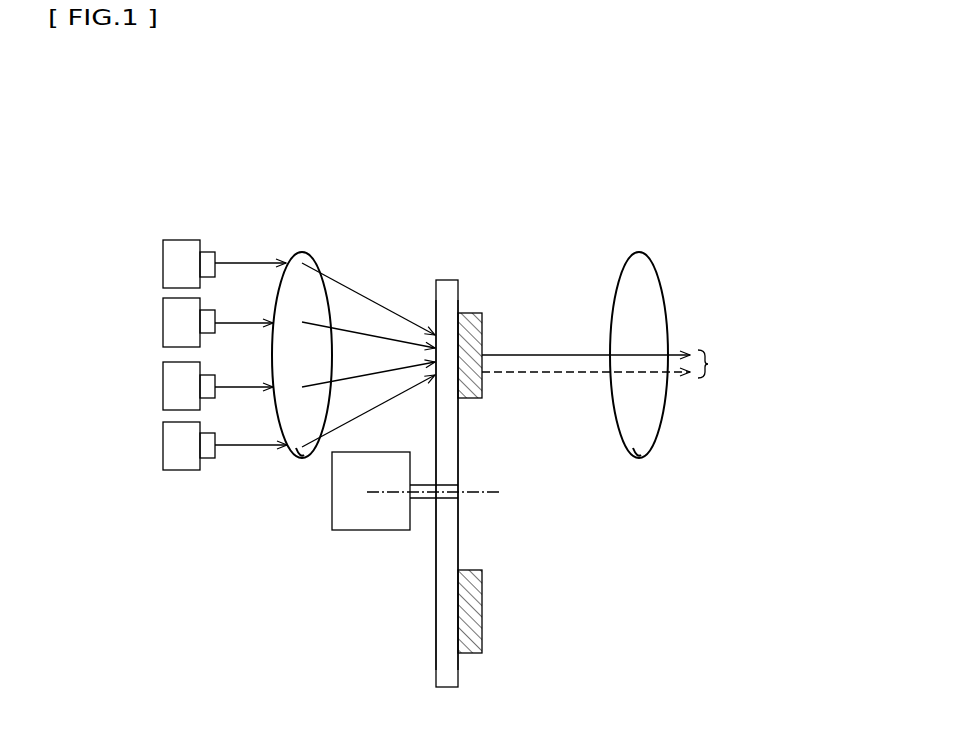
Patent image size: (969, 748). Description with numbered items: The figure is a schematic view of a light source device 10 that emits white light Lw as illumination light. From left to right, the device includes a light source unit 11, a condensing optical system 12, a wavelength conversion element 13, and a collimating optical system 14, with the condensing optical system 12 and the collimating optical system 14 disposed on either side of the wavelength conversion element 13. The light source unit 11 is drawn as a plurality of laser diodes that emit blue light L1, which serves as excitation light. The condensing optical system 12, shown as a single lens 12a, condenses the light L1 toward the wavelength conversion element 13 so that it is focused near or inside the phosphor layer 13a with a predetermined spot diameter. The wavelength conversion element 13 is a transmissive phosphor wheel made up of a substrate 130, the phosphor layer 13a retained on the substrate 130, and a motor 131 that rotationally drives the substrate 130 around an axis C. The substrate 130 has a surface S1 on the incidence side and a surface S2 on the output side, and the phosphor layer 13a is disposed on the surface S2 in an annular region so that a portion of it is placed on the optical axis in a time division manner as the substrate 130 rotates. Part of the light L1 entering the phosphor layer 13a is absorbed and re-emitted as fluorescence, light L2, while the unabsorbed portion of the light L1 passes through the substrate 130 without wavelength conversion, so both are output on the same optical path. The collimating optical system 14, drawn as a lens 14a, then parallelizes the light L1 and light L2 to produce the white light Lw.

The light source device 10 is at (697, 109).
The light source unit 11 is at (153, 177).
The condensing optical system 12 is at (277, 177).
The lens 12a is at (303, 459).
The wavelength conversion element 13 is at (452, 221).
The phosphor layer 13a is at (470, 326).
The substrate 130 is at (446, 643).
The motor 131 is at (372, 532).
The collimating optical system 14 is at (512, 177).
The lens 14a is at (640, 458).
The axis C is at (485, 493).
The surface on incidence side S1 is at (432, 670).
The surface on output side S2 is at (460, 670).
The light L1 is at (247, 259).
The light L2 is at (552, 374).
The white light Lw is at (719, 365).